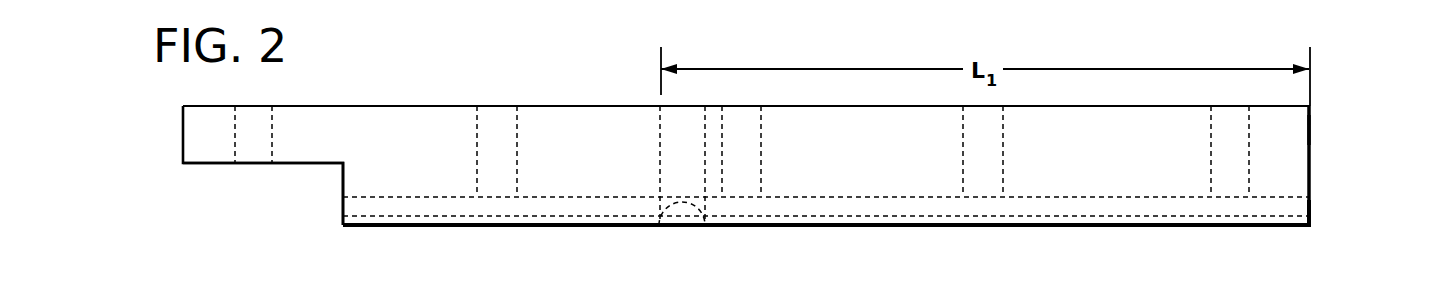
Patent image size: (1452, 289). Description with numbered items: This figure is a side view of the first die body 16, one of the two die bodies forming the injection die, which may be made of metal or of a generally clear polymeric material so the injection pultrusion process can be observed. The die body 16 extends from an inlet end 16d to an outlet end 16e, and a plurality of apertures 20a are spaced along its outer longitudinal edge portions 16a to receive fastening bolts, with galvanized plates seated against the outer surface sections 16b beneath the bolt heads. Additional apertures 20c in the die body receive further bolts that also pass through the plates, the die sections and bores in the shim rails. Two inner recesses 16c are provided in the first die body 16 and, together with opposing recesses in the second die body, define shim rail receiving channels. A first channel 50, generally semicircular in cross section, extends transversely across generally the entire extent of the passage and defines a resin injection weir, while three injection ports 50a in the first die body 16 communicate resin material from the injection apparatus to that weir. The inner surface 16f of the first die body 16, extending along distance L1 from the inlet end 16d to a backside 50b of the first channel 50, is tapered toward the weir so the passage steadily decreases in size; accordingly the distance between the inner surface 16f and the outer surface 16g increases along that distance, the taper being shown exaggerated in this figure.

The first die body 16 is at (1295, 166).
The outer longitudinal edge portion 16a is at (1295, 128).
The outer surface section 16b is at (1307, 104).
The inner recess 16c is at (1270, 198).
The inlet end 16d is at (1310, 225).
The outlet end 16e is at (343, 224).
The inner surface 16f is at (1082, 217).
The outer surface 16g is at (1170, 105).
The apertures 20a is at (477, 139).
The apertures 20c is at (234, 148).
The first channel 50 is at (690, 229).
The injection ports 50a is at (660, 133).
The backside of the first channel 50b is at (660, 226).